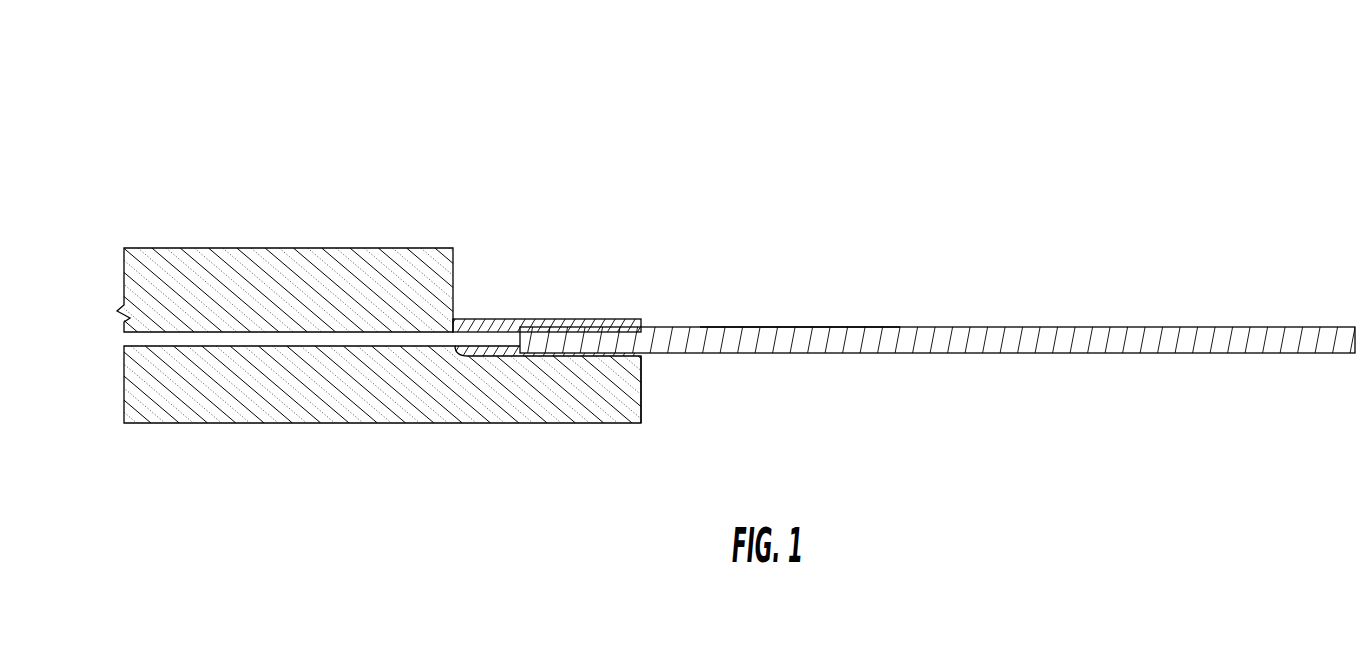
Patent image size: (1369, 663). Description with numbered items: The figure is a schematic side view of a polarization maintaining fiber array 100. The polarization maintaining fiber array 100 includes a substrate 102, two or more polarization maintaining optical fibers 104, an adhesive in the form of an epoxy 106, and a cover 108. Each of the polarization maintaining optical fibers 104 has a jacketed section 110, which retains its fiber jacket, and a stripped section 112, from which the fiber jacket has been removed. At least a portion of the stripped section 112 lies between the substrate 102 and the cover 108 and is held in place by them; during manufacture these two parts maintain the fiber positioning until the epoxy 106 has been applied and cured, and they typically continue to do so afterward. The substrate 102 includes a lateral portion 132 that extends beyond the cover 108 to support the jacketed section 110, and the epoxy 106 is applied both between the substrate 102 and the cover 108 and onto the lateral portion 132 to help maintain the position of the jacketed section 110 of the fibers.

The polarization maintaining fiber array 100 is at (697, 247).
The substrate 102 is at (617, 423).
The polarization maintaining optical fibers 104 is at (788, 325).
The epoxy 106 is at (503, 323).
The cover 108 is at (408, 248).
The jacketed section 110 is at (997, 327).
The stripped section 112 is at (473, 330).
The lateral portion 132 is at (641, 388).